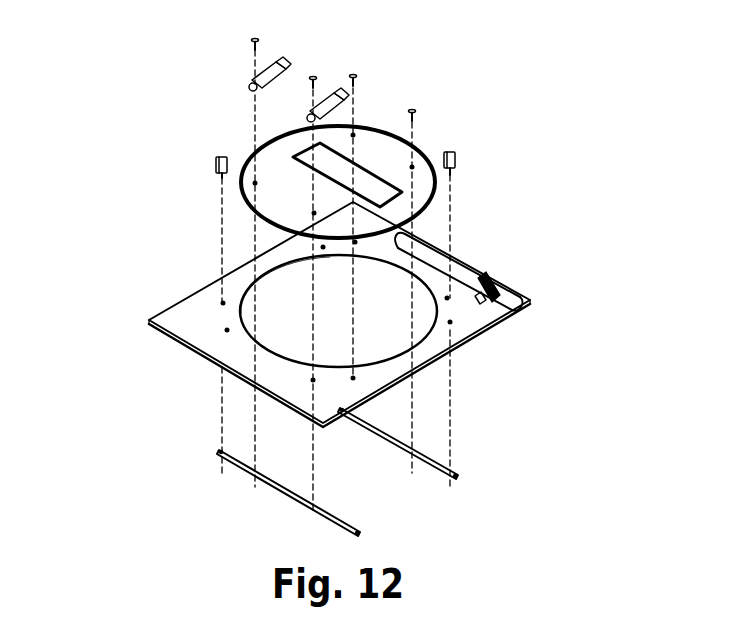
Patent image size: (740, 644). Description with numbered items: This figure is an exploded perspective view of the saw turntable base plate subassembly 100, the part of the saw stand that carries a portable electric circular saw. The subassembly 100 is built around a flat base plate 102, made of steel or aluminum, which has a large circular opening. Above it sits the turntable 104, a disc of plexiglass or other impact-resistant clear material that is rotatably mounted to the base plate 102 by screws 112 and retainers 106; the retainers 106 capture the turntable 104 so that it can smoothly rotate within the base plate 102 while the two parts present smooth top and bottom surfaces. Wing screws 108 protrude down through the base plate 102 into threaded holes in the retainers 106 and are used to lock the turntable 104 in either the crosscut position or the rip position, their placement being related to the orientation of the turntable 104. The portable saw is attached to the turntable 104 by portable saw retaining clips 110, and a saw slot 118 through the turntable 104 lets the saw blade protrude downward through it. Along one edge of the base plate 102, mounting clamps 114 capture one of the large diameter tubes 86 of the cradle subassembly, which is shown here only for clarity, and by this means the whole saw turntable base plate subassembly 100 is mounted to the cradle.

The saw turntable base plate subassembly 100 is at (126, 149).
The base plate 102 is at (167, 333).
The turntable 104 is at (425, 150).
The retainers 106 is at (460, 478).
The wing screws 108 is at (460, 160).
The portable saw retaining clips 110 is at (250, 88).
The screws 112 is at (353, 76).
The mounting clamps 114 is at (483, 283).
The saw slot 118 is at (358, 175).
The large diameter tubes 86 is at (522, 287).